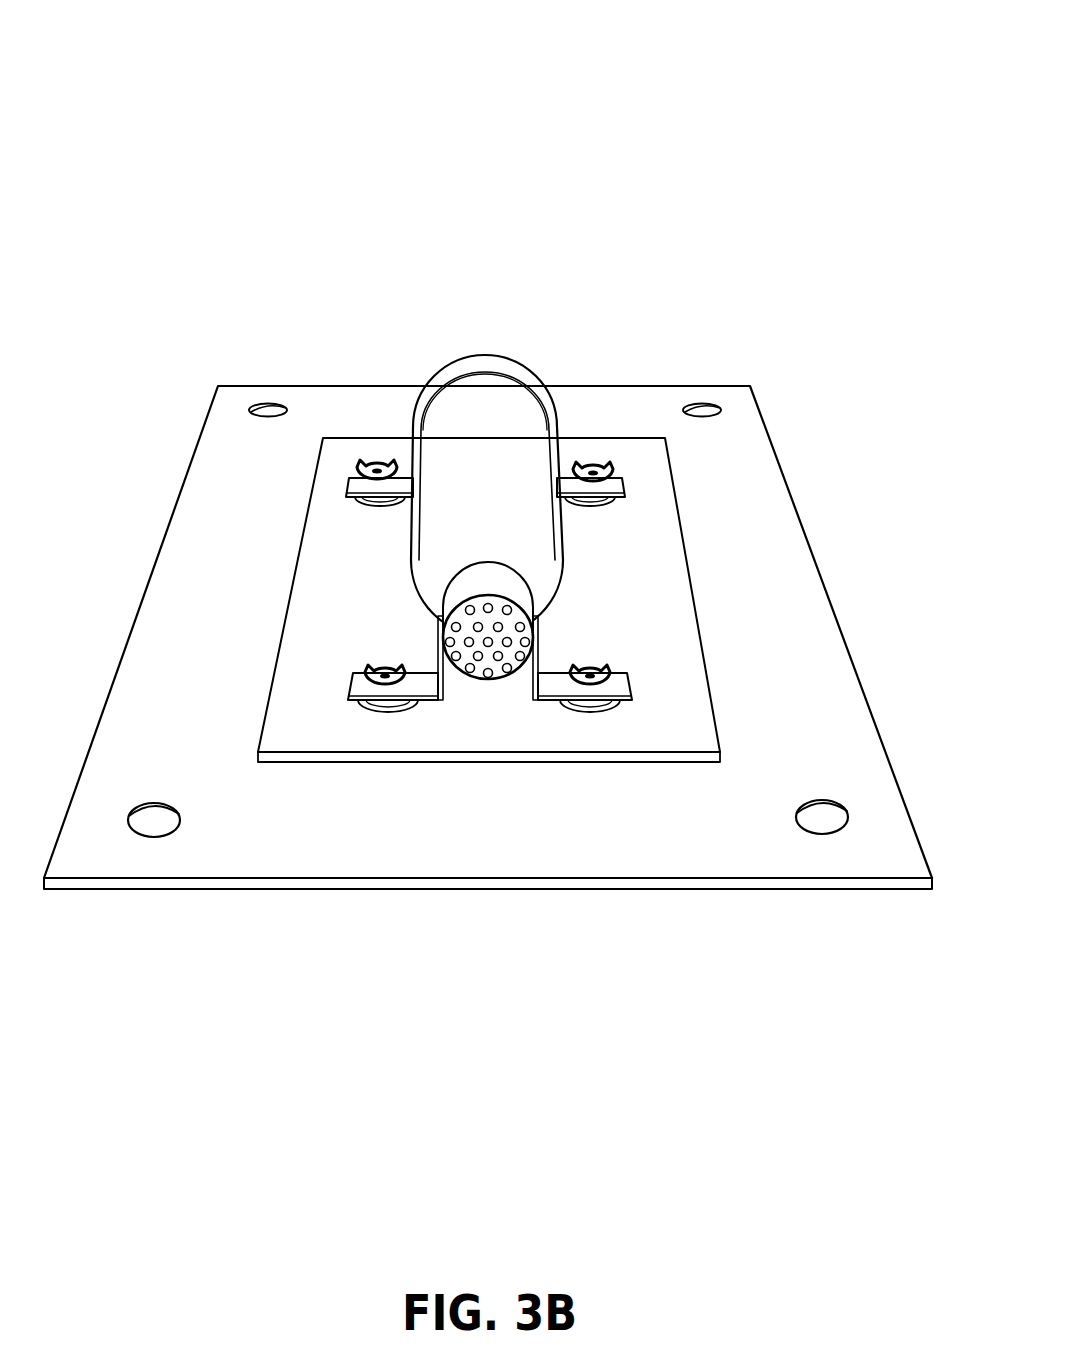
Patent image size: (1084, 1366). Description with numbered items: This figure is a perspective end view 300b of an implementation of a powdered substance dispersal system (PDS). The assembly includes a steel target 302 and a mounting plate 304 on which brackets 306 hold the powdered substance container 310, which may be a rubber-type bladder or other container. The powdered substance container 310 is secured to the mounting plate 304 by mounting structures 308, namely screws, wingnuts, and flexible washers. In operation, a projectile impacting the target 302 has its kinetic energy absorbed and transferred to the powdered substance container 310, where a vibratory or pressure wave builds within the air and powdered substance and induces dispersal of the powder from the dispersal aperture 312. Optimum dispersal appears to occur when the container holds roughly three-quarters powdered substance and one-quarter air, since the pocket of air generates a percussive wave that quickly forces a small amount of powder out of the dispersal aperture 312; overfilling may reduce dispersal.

The view 300b is at (502, 444).
The target 302 is at (637, 393).
The mounting plate 304 is at (666, 575).
The brackets 306 is at (487, 362).
The mounting structures 308 is at (362, 470).
The powdered substance container 310 is at (423, 527).
The dispersal aperture 312 is at (480, 665).